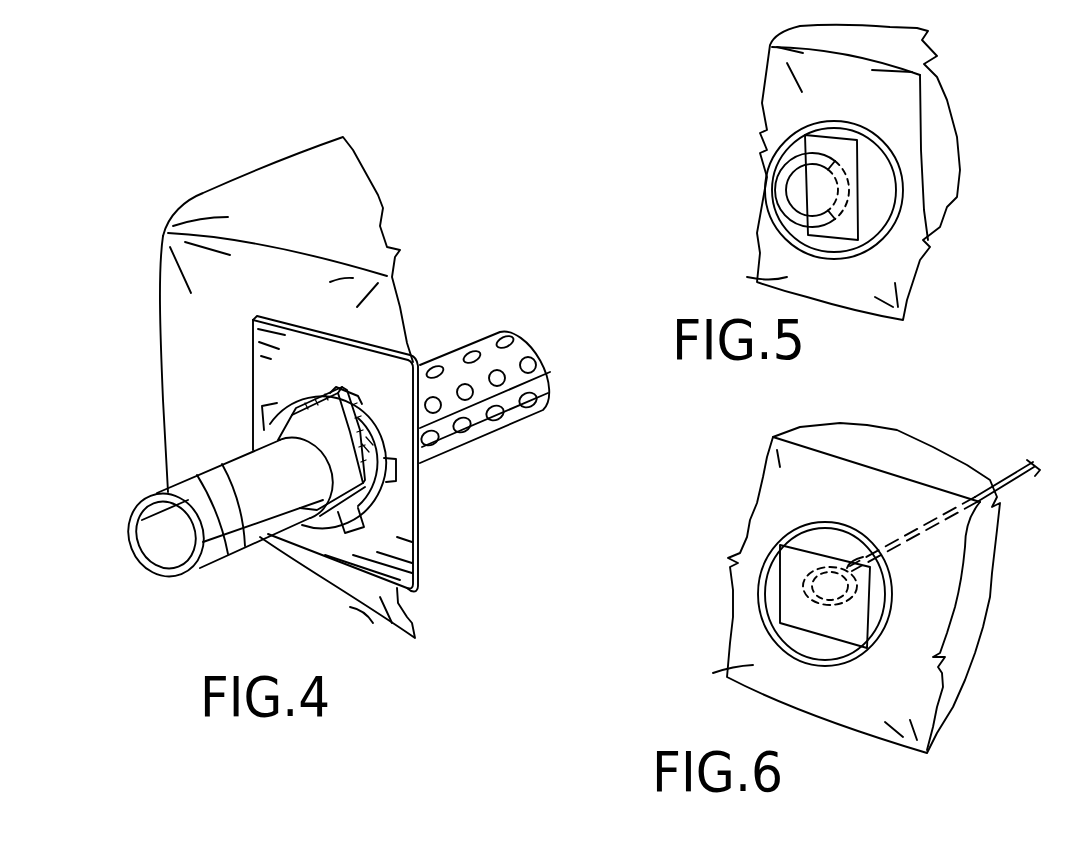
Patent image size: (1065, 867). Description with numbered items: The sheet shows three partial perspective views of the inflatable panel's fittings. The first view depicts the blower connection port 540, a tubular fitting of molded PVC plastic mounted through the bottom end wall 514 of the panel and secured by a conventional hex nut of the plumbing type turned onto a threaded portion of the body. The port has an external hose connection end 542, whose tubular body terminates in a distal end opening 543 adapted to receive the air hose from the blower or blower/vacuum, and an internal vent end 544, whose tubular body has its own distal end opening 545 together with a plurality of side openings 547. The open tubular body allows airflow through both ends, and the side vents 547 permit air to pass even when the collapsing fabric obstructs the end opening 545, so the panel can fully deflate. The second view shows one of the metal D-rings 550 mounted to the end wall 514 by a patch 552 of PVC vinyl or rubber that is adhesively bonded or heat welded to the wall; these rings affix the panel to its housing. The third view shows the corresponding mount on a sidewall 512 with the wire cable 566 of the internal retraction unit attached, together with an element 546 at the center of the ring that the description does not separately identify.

In FIG. 6, the panel end walls 512 is at (752, 648).
In FIG. 4, the top and bottom walls 514 is at (174, 293).
In FIG. 5, the top and bottom walls 514 is at (890, 115).
In FIG. 4, the blower connection port 540 is at (414, 293).
In FIG. 4, the hose connection end 542 is at (240, 522).
In FIG. 4, the distal end opening 543 is at (282, 438).
In FIG. 4, the vent end 544 is at (480, 337).
In FIG. 6, the vent end 544 is at (817, 567).
In FIG. 4, the distal end opening 545 is at (526, 409).
In FIG. 6, the mounting plate 546 is at (853, 623).
In FIG. 4, the side openings 547 is at (527, 400).
In FIG. 5, the D-rings 550 is at (787, 187).
In FIG. 5, the patch 552 is at (843, 197).
In FIG. 6, the wire cable 566 is at (915, 523).